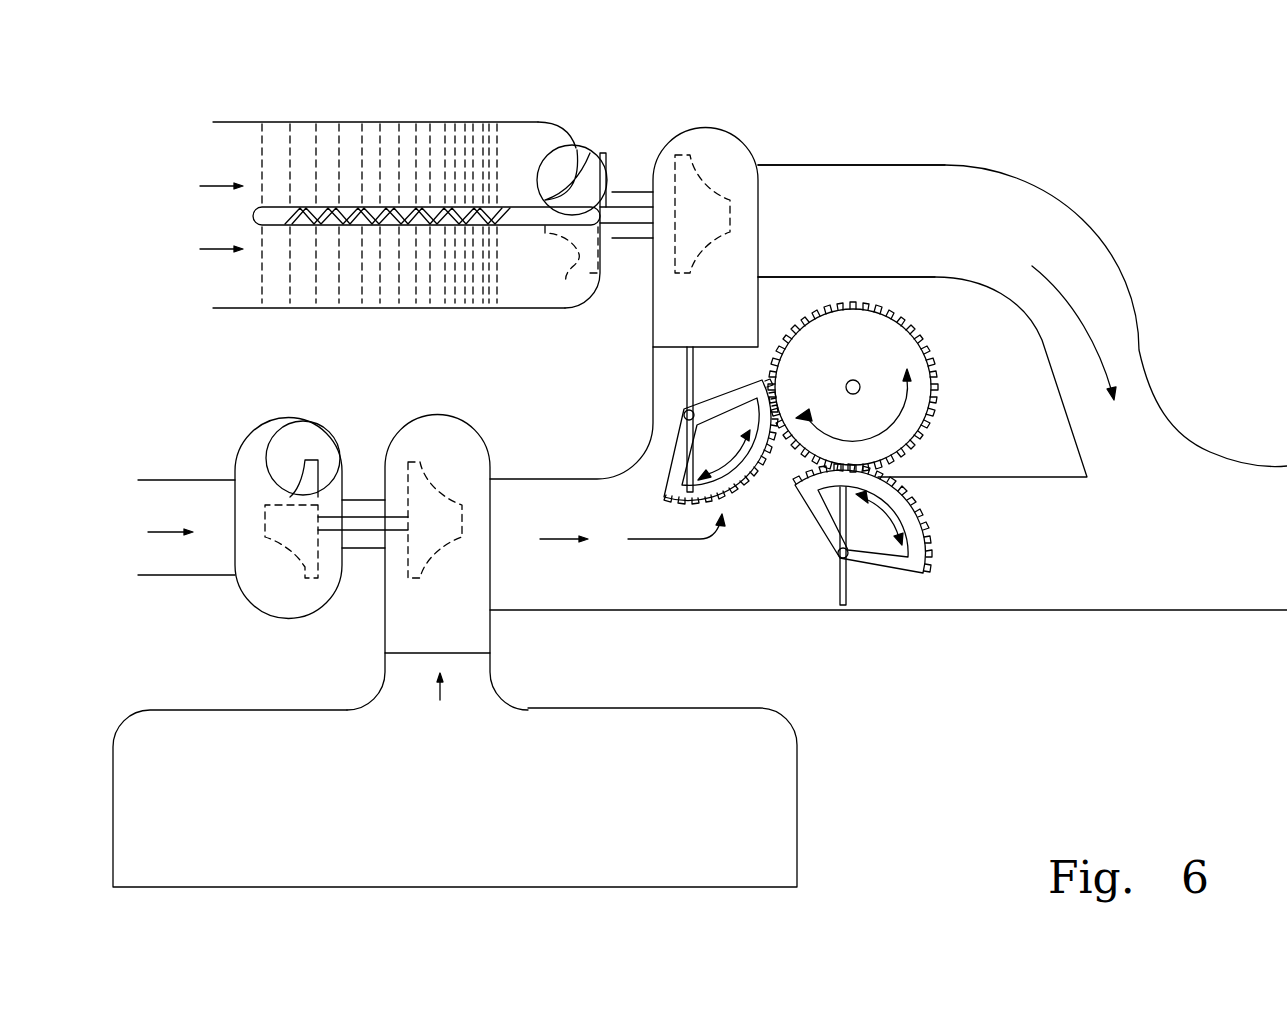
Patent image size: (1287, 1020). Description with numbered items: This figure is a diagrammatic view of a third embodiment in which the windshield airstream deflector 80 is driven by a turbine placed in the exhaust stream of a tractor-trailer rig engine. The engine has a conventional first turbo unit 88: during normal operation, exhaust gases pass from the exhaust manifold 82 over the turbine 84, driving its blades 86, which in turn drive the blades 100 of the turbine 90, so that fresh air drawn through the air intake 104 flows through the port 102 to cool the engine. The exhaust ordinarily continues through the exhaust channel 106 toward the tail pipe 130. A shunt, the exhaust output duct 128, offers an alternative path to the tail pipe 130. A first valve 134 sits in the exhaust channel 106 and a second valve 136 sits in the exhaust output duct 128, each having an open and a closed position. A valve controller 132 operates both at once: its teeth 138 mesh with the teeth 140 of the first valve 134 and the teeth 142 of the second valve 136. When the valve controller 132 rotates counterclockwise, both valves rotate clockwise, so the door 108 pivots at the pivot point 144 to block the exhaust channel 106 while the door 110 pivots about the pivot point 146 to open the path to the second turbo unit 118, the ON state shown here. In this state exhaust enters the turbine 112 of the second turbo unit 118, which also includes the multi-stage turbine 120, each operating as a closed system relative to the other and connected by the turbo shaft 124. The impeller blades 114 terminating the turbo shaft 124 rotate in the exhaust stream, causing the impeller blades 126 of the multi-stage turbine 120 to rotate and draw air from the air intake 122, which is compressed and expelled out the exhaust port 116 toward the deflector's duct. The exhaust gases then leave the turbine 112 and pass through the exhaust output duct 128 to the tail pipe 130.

The windshield airstream deflector 80 is at (1169, 123).
The exhaust manifold 82 is at (432, 832).
The turbine 84 is at (507, 456).
The blades 86 is at (413, 456).
The first turbo unit 88 is at (495, 380).
The turbine 90 is at (247, 594).
The blades 100 is at (293, 552).
The port 102 is at (295, 432).
The air intake 104 is at (186, 527).
The exhaust channel 106 is at (533, 586).
The door 108 is at (842, 582).
The door 110 is at (686, 372).
The turbine 112 is at (729, 155).
The impeller blades 114 is at (703, 137).
The exhaust port 116 is at (556, 147).
The second turbo unit 118 is at (466, 96).
The multi-stage turbine 120 is at (579, 124).
The air intake 122 is at (392, 202).
The turbo shaft 124 is at (628, 212).
The impeller blades 126 is at (566, 282).
The exhaust output duct 128 is at (783, 233).
The tail pipe 130 is at (1004, 409).
The valve controller 132 is at (877, 342).
The first valve 134 is at (910, 560).
The second valve 136 is at (668, 458).
The teeth 138 is at (930, 410).
The teeth 140 is at (920, 505).
The teeth 142 is at (733, 502).
The pivot point 144 is at (838, 553).
The pivot point 146 is at (690, 408).